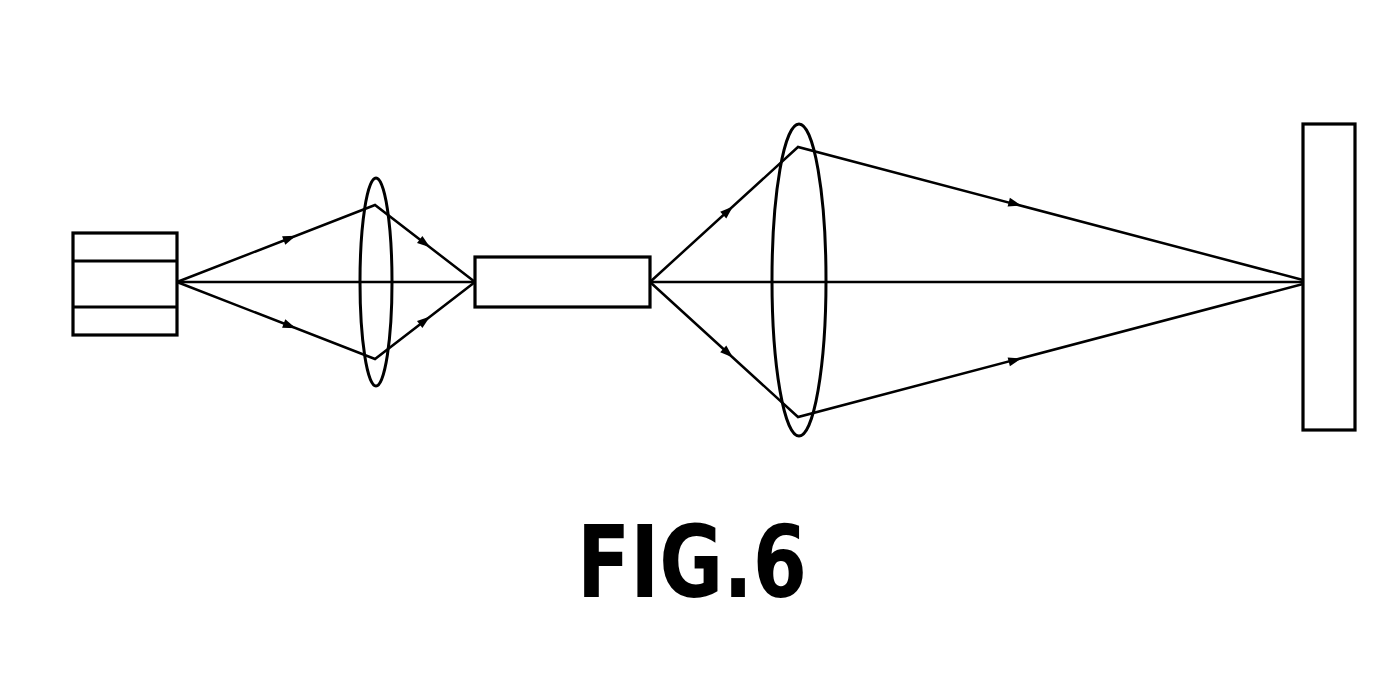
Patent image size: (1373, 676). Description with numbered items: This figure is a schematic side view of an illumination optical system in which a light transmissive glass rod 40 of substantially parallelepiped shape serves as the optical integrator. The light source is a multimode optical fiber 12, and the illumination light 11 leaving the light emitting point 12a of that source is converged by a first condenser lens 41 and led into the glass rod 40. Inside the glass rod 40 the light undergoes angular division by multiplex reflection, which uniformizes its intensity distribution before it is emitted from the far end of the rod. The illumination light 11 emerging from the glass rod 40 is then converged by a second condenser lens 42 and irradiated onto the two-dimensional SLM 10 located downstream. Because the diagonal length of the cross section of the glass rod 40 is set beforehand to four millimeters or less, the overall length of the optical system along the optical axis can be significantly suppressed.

The two-dimensional SLM 10 is at (1325, 172).
The illumination light 11 is at (253, 250).
The multimode optical fiber 12 is at (120, 222).
The light emitting point of light source 12a is at (133, 295).
The glass rod 40 is at (567, 273).
The condenser lens 41 is at (377, 187).
The condenser lens 42 is at (797, 125).